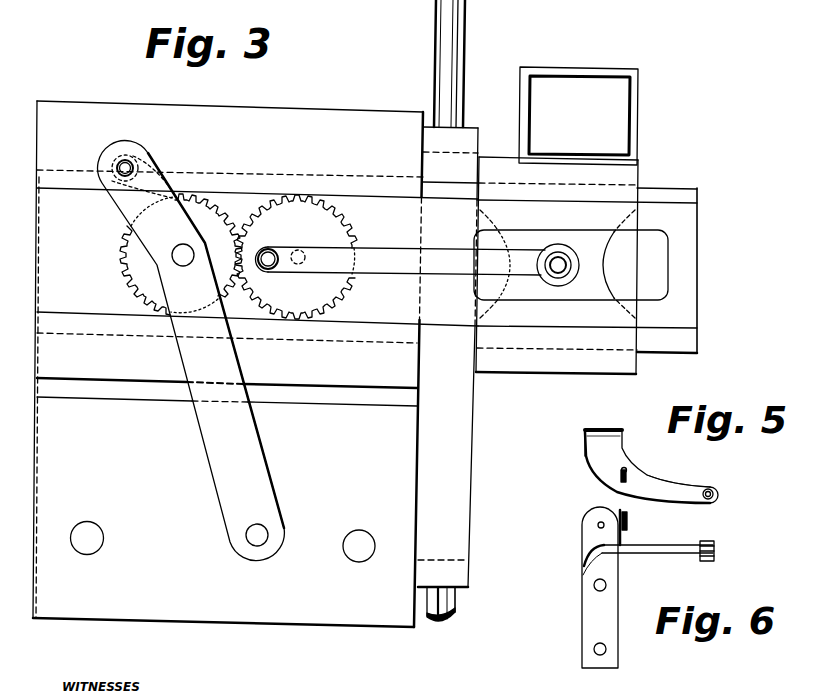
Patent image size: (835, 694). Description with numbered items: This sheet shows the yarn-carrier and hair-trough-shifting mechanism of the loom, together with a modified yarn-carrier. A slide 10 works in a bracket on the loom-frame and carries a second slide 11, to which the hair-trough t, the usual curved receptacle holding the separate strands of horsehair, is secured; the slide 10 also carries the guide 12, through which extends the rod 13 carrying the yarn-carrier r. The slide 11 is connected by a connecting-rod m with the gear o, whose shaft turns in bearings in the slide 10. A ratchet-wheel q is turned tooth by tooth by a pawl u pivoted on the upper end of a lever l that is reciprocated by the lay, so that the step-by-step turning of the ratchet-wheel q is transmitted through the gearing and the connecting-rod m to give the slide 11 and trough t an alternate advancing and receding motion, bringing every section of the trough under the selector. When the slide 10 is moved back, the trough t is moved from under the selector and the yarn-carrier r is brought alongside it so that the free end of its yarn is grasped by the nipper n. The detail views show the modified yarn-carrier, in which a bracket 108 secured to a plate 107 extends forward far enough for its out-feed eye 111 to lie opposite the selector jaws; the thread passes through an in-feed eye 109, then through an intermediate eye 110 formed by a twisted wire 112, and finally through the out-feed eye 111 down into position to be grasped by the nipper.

In FIG. 3, the slide 10 is at (687, 318).
In FIG. 3, the slide 11 is at (562, 360).
In FIG. 3, the guide 12 is at (472, 138).
In FIG. 3, the rod 13 is at (455, 43).
In FIG. 3, the trough t is at (637, 122).
In FIG. 3, the nipper n is at (661, 5).
In FIG. 3, the lever l is at (208, 447).
In FIG. 3, the pawl u is at (172, 187).
In FIG. 3, the ratchet-wheel q is at (130, 272).
In FIG. 3, the gear o is at (337, 233).
In FIG. 3, the connecting-rod m is at (388, 271).
In FIG. 5, the yarn-carrier r is at (592, 458).
In FIG. 6, the yarn-carrier r is at (587, 574).
In FIG. 5, the plate 107 is at (608, 425).
In FIG. 6, the plate 107 is at (585, 617).
In FIG. 5, the bracket 108 is at (682, 481).
In FIG. 6, the bracket 108 is at (672, 556).
In FIG. 5, the eye 109 is at (602, 428).
In FIG. 6, the eye 109 is at (598, 525).
In FIG. 5, the intermediate eye 110 is at (620, 477).
In FIG. 6, the intermediate eye 110 is at (628, 525).
In FIG. 5, the out-feed eye 111 is at (715, 489).
In FIG. 6, the out-feed eye 111 is at (703, 542).
In FIG. 5, the twisted wire 112 is at (645, 456).
In FIG. 6, the twisted wire 112 is at (641, 514).